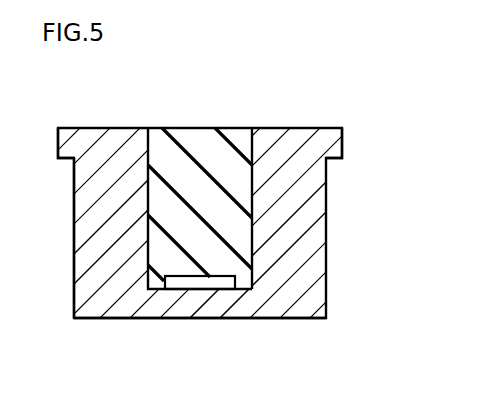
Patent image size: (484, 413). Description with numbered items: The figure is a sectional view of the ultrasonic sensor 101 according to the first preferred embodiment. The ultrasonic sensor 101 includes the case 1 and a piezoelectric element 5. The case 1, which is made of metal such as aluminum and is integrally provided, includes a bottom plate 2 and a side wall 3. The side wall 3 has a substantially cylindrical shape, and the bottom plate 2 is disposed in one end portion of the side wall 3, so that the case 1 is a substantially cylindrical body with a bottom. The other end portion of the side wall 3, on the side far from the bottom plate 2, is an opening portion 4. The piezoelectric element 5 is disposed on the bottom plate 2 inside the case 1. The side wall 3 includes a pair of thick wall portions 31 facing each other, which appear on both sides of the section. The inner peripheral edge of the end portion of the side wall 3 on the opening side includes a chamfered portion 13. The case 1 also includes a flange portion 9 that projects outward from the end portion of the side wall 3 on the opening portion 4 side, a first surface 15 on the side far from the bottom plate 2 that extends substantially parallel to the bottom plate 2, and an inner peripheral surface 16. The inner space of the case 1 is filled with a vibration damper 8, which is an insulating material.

The ultrasonic sensor 101 is at (313, 93).
The case 1 is at (375, 150).
The bottom plate 2 is at (232, 304).
The side wall 3 is at (317, 217).
The flange portion 9 is at (333, 146).
The first surface 15 is at (77, 128).
The thick wall portions 31 is at (118, 183).
The inner peripheral surface 16 is at (157, 153).
The opening portion 4 is at (187, 128).
The vibration damper 8 is at (215, 155).
The chamfered portion 13 is at (252, 131).
The piezoelectric element 5 is at (203, 283).